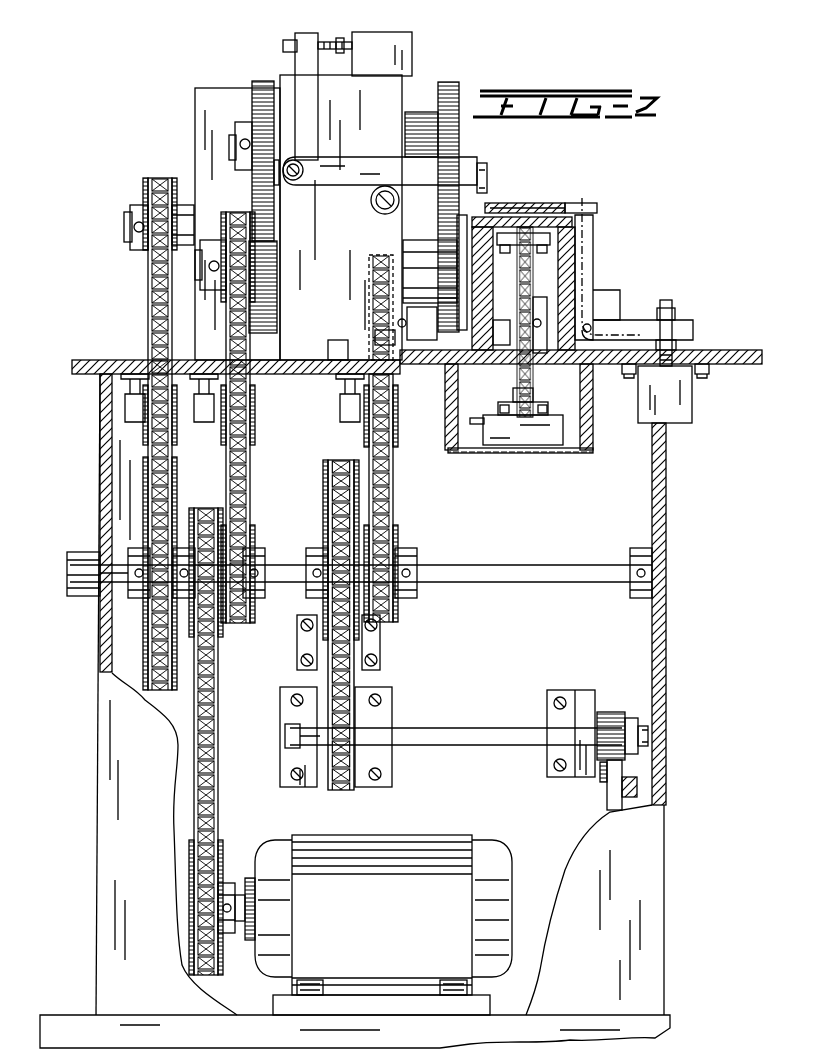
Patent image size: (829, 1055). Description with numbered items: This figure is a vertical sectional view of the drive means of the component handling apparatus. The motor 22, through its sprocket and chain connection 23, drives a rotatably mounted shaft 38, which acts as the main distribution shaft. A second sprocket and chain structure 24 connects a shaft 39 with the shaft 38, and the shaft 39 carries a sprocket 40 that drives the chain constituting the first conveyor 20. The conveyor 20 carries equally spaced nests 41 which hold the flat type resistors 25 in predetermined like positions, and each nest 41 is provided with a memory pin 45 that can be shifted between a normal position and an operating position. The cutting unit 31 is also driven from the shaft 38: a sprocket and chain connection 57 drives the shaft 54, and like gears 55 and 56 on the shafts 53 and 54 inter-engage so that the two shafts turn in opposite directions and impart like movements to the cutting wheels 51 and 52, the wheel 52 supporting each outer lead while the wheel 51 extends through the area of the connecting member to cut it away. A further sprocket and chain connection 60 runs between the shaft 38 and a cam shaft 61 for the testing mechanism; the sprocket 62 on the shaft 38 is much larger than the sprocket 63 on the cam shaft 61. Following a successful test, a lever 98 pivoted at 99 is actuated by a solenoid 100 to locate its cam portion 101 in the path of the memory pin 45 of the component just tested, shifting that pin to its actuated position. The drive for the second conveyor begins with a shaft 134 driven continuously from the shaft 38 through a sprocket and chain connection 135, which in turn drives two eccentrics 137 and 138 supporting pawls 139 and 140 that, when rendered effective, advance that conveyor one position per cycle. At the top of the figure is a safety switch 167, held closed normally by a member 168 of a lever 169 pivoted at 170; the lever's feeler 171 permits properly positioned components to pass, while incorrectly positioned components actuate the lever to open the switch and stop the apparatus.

The first conveyor 20 is at (516, 242).
The motor 22 is at (445, 835).
The sprocket and chain connection 23 is at (219, 739).
The sprocket and chain structure 24 is at (398, 463).
The flat type resistor 25 is at (585, 204).
The cutting unit 31 is at (426, 100).
The shaft 38 is at (511, 584).
The shaft 39 is at (410, 365).
The sprocket 40 is at (517, 374).
The nest 41 is at (530, 205).
The memory pin 45 is at (556, 206).
The cutting wheel 51 is at (460, 90).
The cutting wheel 52 is at (460, 229).
The shaft 53 is at (238, 130).
The shaft 54 is at (206, 252).
The gear 55 is at (262, 82).
The gear 56 is at (277, 270).
The sprocket and chain connection 57 is at (252, 457).
The sprocket and chain connection 60 is at (150, 311).
The cam shaft 61 is at (176, 188).
The sprocket 62 is at (152, 692).
The sprocket 63 is at (148, 263).
The lever 98 is at (648, 324).
The pivot 99 is at (588, 332).
The solenoid 100 is at (693, 402).
The cam portion 101 is at (596, 222).
The shaft 134 is at (481, 727).
The sprocket and chain connection 135 is at (328, 599).
The eccentric 137 is at (650, 724).
The eccentric 138 is at (617, 712).
The pawl 139 is at (640, 783).
The pawl 140 is at (607, 803).
The safety switch 167 is at (412, 49).
The member 168 is at (335, 42).
The lever 169 is at (343, 160).
The pivot 170 is at (301, 177).
The feeler 171 is at (487, 192).